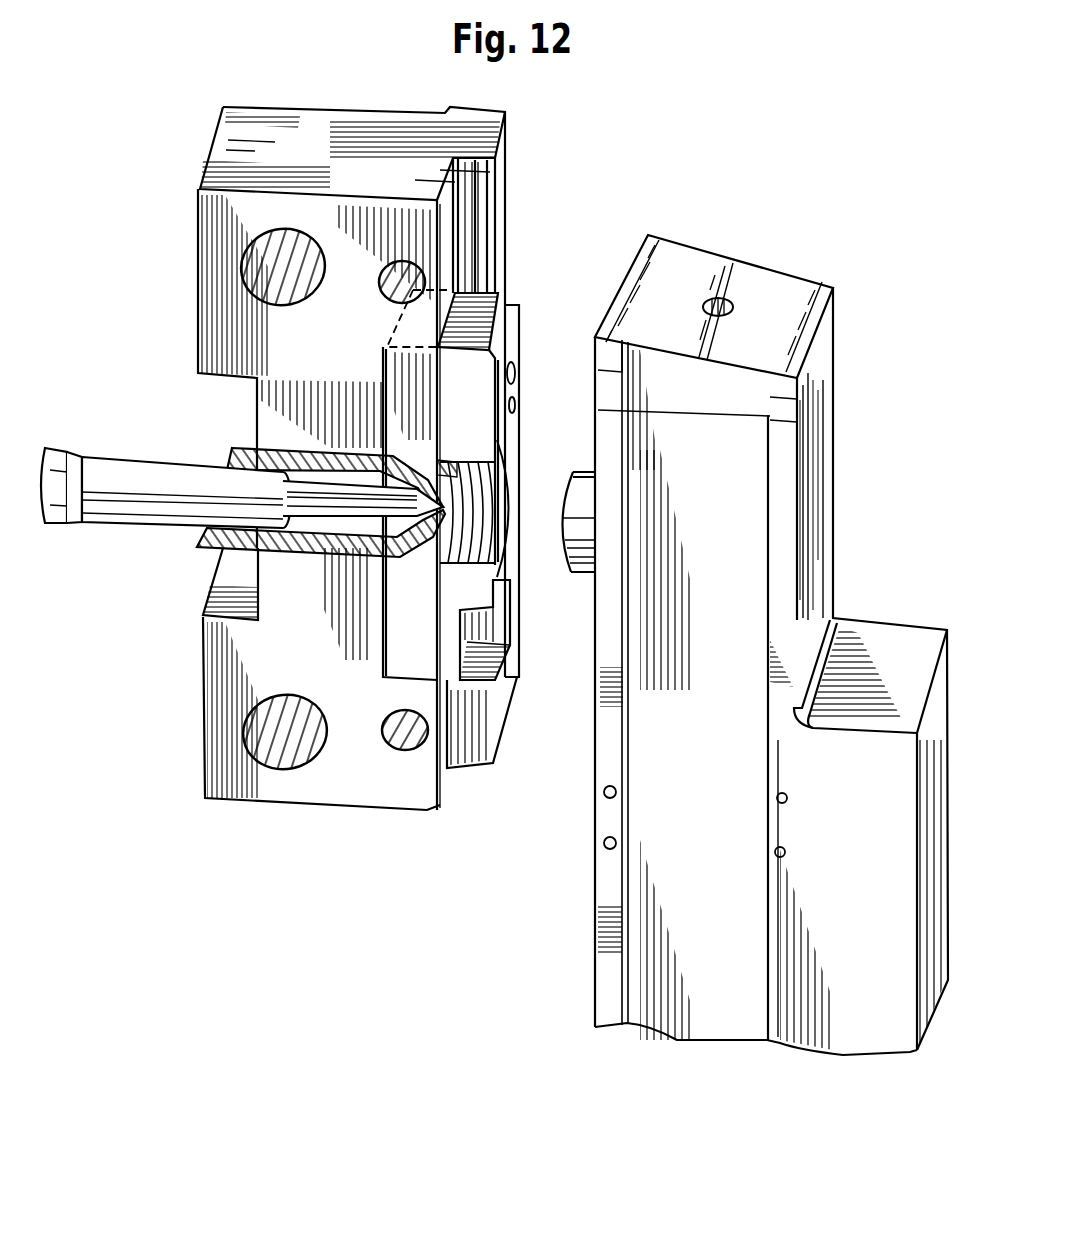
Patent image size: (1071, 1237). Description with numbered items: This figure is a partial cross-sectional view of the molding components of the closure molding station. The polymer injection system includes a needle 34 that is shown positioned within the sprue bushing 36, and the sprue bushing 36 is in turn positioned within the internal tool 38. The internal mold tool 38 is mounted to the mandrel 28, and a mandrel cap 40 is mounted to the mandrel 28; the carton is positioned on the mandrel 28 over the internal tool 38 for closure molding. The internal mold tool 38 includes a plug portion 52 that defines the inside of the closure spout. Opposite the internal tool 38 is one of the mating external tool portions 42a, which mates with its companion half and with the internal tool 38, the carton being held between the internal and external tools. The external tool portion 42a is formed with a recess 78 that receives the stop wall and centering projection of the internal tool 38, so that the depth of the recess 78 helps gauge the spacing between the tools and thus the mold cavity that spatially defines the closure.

The mandrel 28 is at (740, 500).
The needle 34 is at (308, 530).
The sprue bushing 36 is at (362, 565).
The internal tool 38 is at (593, 470).
The mandrel cap 40 is at (678, 267).
The external tool portion 42a is at (519, 322).
The plug portion 52 is at (577, 545).
The recess 78 is at (510, 662).